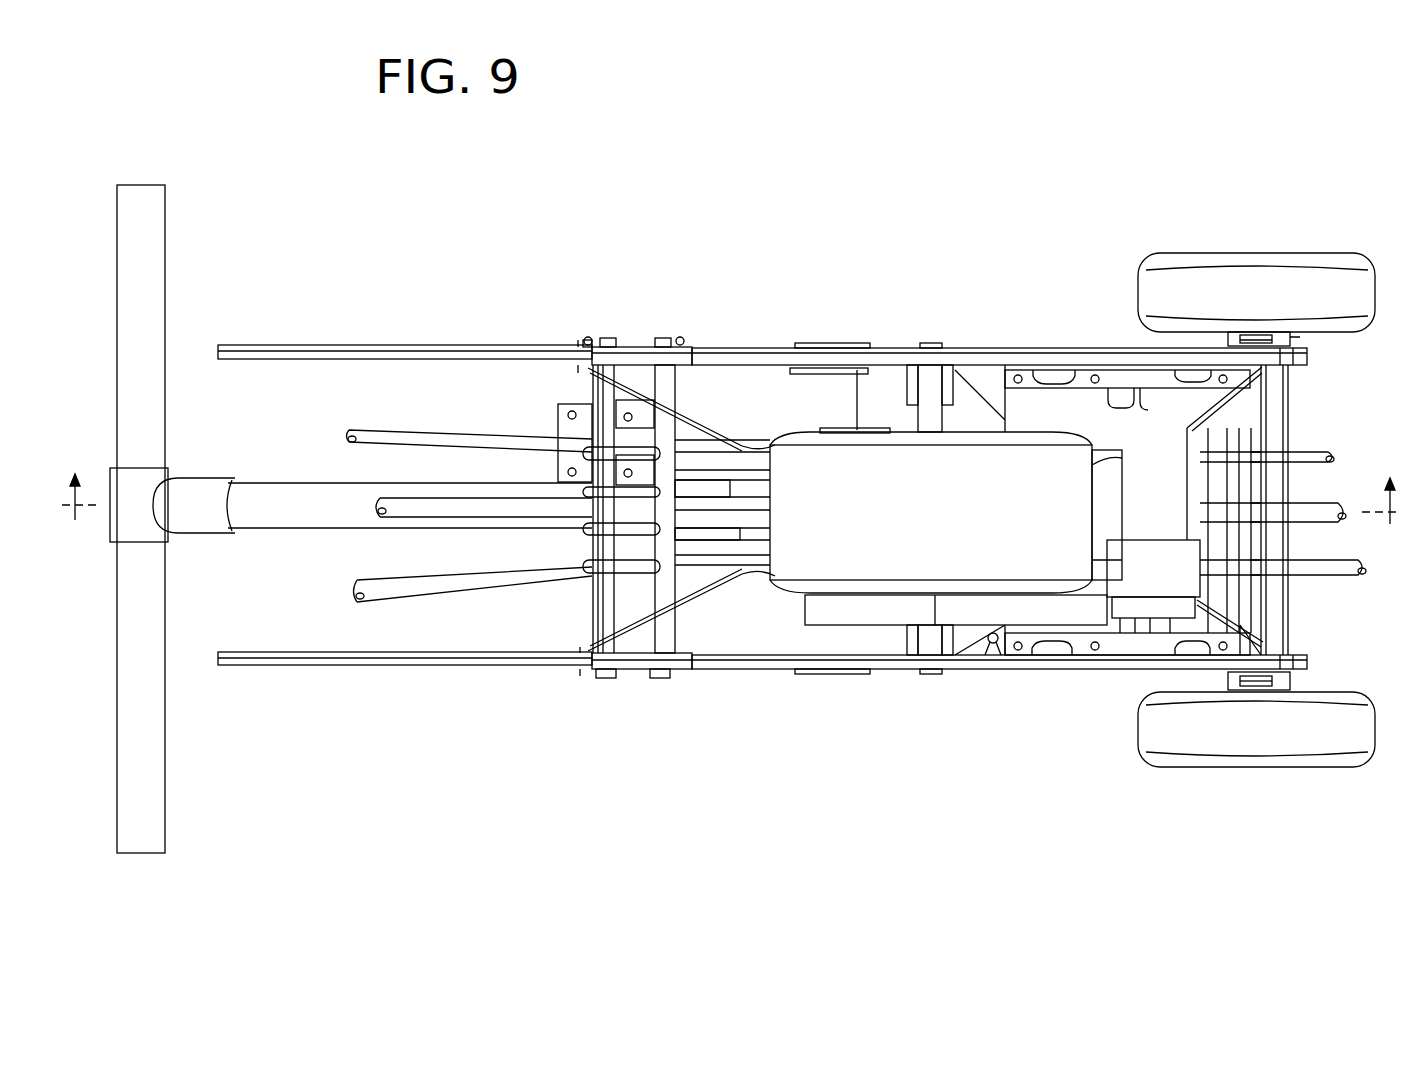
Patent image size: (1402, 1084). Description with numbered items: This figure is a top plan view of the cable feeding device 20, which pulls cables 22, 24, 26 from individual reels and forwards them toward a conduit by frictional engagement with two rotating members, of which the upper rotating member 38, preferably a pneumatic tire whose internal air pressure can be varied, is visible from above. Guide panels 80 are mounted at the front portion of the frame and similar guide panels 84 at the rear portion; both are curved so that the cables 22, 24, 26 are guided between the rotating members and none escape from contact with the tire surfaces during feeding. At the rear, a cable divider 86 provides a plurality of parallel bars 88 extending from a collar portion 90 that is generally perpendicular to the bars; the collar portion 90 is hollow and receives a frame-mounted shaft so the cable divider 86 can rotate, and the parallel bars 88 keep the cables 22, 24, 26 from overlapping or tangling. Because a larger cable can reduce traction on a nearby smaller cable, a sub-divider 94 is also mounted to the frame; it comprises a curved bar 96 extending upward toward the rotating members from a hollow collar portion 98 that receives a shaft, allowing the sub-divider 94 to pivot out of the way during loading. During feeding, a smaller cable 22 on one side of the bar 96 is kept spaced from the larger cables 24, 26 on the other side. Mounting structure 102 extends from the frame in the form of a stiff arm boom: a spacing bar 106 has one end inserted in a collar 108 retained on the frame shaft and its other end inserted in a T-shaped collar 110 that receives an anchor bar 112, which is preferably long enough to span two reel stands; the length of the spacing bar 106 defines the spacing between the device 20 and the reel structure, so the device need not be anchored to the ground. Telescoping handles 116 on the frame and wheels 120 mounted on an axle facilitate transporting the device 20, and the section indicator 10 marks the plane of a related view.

The section line 10 is at (731, 510).
The cable feeding device 20 is at (474, 735).
The cable 22 is at (384, 433).
The cable 24 is at (438, 502).
The cable 26 is at (428, 588).
The rotating member 38 is at (958, 522).
The guide panel 80 is at (1244, 404).
The guide panel 84 is at (690, 436).
The cable divider 86 is at (682, 622).
The parallel bar 88 is at (600, 570).
The collar portion 90 is at (660, 402).
The sub-divider 94 is at (586, 423).
The bar 96 is at (716, 448).
The collar portion 98 is at (604, 397).
The mounting structure 102 is at (318, 482).
The spacing bar 106 is at (303, 526).
The collar 108 is at (536, 494).
The T-shaped collar 110 is at (190, 528).
The anchor bar 112 is at (150, 742).
The handle 116 is at (352, 322).
The wheel 120 is at (1328, 245).